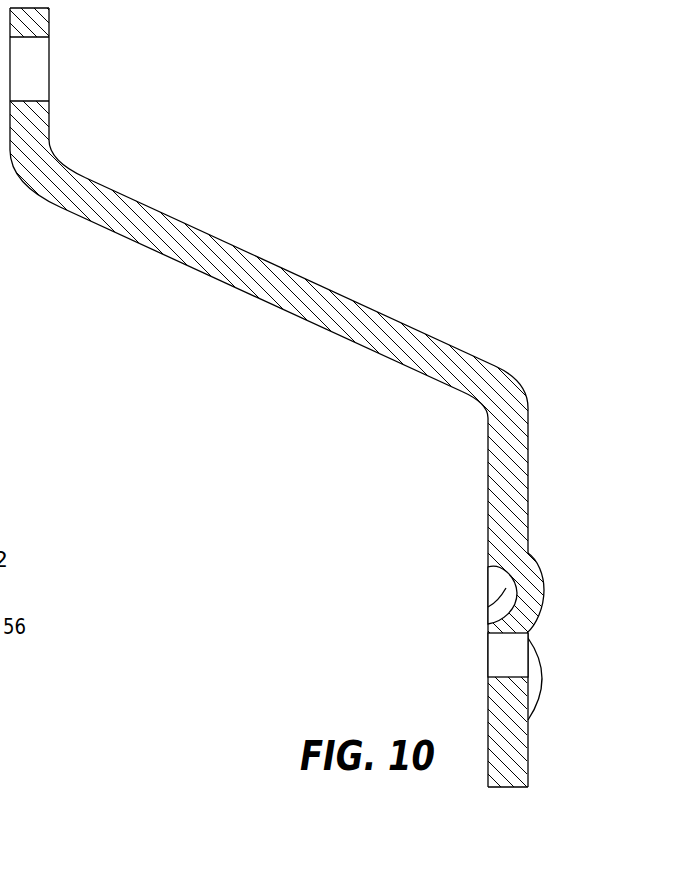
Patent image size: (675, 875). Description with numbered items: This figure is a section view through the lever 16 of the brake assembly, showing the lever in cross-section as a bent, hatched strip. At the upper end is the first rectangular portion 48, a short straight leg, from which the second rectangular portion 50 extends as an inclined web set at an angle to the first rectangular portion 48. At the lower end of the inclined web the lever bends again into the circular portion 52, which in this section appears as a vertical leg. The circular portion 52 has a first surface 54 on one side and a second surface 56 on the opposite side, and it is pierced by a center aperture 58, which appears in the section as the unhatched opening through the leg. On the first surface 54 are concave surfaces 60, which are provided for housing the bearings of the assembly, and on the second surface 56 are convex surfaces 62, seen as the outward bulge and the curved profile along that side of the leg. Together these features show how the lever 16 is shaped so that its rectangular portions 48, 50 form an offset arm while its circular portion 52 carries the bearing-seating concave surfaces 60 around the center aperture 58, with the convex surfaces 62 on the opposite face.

The lever 16 is at (49, 14).
The first rectangular portion 48 is at (35, 125).
The second rectangular portion 50 is at (236, 245).
The circular portion 52 is at (520, 770).
The first surface 54 is at (488, 710).
The second surface 56 is at (528, 747).
The center aperture 58 is at (500, 653).
The concave surfaces 60 is at (498, 590).
The convex surfaces 62 is at (540, 571).